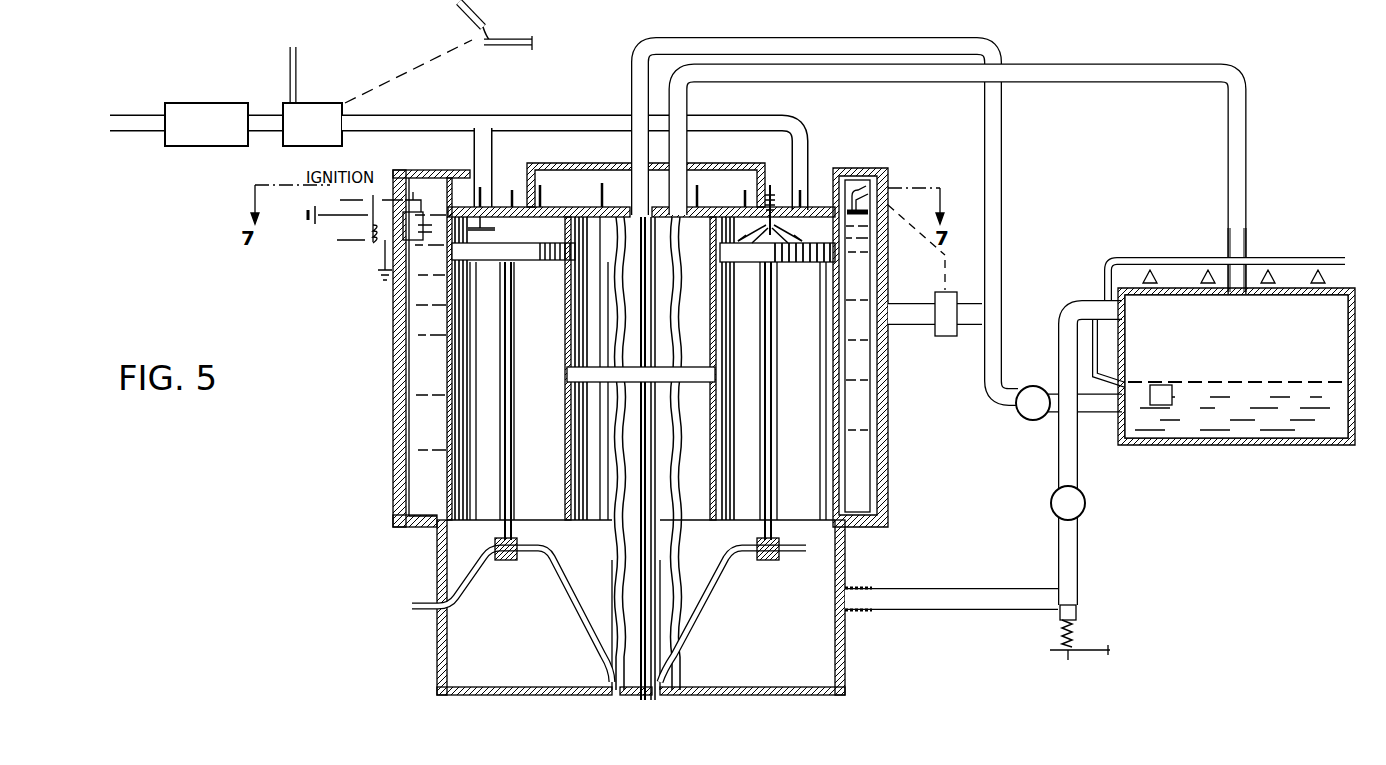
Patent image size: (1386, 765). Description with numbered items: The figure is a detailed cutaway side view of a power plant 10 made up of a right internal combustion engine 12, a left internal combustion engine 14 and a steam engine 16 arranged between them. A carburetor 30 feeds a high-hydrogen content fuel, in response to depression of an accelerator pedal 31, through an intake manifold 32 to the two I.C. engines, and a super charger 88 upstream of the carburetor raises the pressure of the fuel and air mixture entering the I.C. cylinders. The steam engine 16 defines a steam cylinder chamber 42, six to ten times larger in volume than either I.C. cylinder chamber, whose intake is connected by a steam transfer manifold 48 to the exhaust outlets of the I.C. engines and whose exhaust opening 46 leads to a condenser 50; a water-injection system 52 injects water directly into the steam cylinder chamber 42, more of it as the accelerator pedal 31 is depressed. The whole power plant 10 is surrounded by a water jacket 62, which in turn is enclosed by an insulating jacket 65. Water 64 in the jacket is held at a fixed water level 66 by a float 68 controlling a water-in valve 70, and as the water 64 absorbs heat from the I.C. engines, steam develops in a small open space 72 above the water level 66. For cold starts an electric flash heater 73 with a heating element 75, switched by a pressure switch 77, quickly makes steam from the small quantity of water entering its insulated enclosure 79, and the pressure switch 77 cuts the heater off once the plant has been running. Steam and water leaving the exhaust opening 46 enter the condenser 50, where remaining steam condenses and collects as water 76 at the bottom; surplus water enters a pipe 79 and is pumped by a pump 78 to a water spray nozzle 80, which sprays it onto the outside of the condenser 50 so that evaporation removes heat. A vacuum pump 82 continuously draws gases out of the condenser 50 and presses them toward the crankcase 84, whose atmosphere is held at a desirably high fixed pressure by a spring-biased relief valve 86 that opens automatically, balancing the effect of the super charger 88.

The power plant 10 is at (364, 406).
The right internal combustion engine 12 is at (807, 444).
The left internal combustion engine 14 is at (537, 444).
The steam engine 16 is at (682, 444).
The carburetor 30 is at (332, 108).
The accelerator pedal 31 is at (476, 14).
The intake manifold 32 is at (458, 118).
The steam cylinder chamber 42 is at (572, 338).
The exhaust opening 46 is at (829, 221).
The steam transfer manifold 48 is at (588, 172).
The condenser 50 is at (1348, 334).
The water-injection system 52 is at (640, 215).
The water jacket 62 is at (395, 348).
The water 64 is at (398, 306).
The insulating jacket 65 is at (386, 515).
The water level 66 is at (468, 176).
The float 68 is at (860, 175).
The water-in valve 70 is at (950, 292).
The open space 72 is at (414, 186).
The electric flash heater 73 is at (398, 245).
The heating element 75 is at (403, 226).
The water 76 is at (1273, 376).
The pressure switch 77 is at (397, 172).
The pump 78 is at (1172, 385).
The pipe 79 is at (436, 192).
The water spray nozzle 80 is at (1305, 260).
The vacuum pump 82 is at (1084, 514).
The crankcase 84 is at (437, 648).
The spring-biased relief valve 86 is at (1078, 618).
The super charger 88 is at (218, 108).